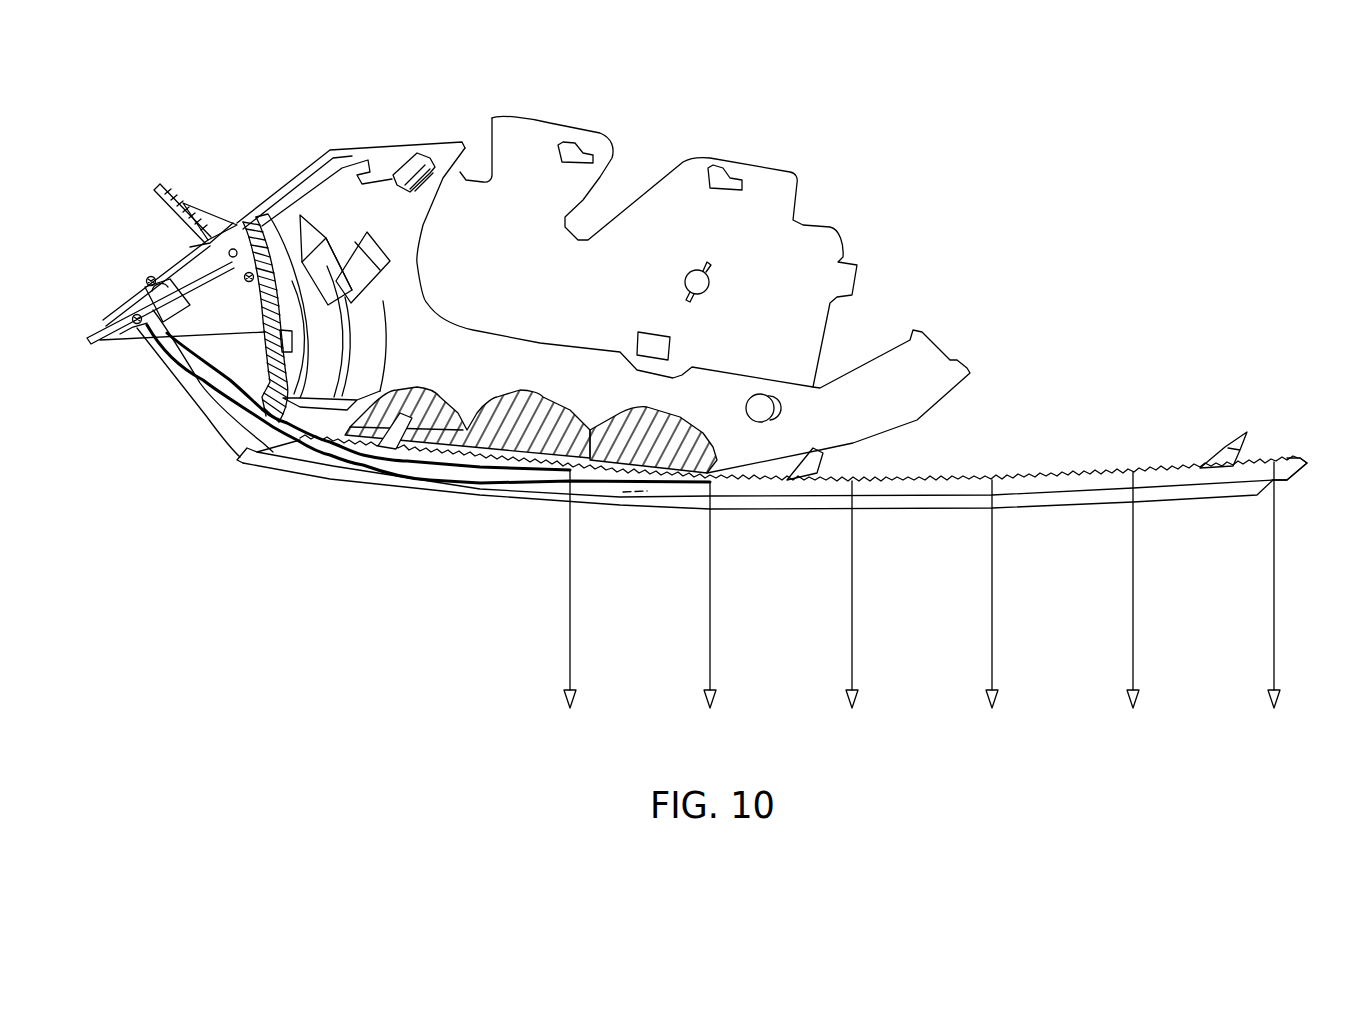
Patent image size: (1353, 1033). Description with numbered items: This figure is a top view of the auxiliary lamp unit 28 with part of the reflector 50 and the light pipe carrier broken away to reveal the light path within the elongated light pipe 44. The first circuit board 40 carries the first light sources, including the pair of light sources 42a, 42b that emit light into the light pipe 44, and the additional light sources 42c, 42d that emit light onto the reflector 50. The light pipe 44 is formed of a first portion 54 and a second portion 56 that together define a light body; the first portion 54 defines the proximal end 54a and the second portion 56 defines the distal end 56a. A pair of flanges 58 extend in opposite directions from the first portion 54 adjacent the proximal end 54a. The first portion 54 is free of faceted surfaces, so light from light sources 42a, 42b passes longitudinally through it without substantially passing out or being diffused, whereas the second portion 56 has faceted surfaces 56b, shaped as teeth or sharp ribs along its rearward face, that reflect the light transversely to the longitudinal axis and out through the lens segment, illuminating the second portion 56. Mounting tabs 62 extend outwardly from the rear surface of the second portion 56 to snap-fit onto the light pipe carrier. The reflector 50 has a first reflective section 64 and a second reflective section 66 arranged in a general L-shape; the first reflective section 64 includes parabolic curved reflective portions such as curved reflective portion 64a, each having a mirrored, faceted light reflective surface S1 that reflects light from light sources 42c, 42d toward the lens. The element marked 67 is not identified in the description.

The auxiliary lamp unit 28 is at (258, 160).
The first circuit board 40 is at (98, 318).
The light source 42a is at (136, 313).
The light source 42b is at (150, 279).
The light source 42c is at (233, 249).
The light source 42d is at (251, 281).
The flanges 58 is at (170, 295).
The first portion 54 is at (207, 412).
The proximal end 54a is at (133, 329).
The light reflective surface S1 is at (258, 318).
The reflector 50 is at (460, 322).
The first reflective section 64 is at (367, 357).
The curved reflective portion 64a is at (300, 347).
The mounting tabs 62 is at (453, 407).
The second reflective section 66 is at (565, 405).
The fin 67 is at (830, 462).
The second portion 56 is at (786, 490).
The distal end 56a is at (1298, 476).
The faceted surfaces 56b is at (1095, 472).
The elongated light pipe 44 is at (917, 515).